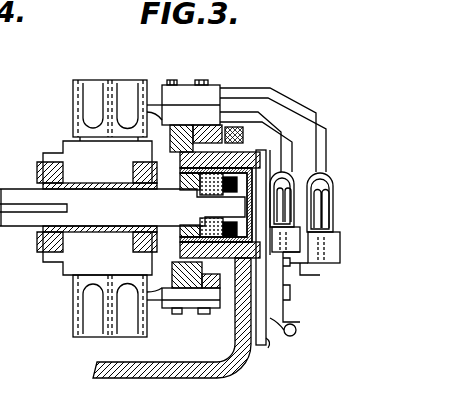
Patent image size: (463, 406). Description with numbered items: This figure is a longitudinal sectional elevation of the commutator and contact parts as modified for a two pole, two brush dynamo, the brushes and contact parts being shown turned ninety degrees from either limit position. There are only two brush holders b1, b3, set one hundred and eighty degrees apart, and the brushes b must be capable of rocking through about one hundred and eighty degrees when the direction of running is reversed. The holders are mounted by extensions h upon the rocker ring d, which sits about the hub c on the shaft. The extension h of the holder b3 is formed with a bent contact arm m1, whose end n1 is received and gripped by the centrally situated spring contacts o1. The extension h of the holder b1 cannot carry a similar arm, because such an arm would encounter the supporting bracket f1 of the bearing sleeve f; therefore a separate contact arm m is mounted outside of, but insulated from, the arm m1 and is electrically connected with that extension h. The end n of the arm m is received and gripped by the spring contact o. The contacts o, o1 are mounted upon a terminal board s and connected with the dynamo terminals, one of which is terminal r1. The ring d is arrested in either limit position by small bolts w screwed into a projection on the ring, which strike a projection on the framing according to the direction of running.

The brushes b is at (100, 76).
The brush holder b3 is at (150, 84).
The brush holder b1 is at (163, 304).
The hub c is at (97, 207).
The extension h is at (172, 112).
The rocker ring d is at (200, 138).
The small bolts w is at (243, 136).
The bearing sleeve f is at (244, 130).
The supporting bracket f1 is at (238, 346).
The bent contact arm m1 is at (273, 119).
The contact arm m is at (275, 130).
The end of contact arm n1 is at (284, 172).
The spring contacts o1 is at (296, 172).
The spring contact o is at (338, 190).
The end of contact arm n is at (322, 180).
The dynamo terminal r1 is at (297, 322).
The terminal board s is at (264, 340).